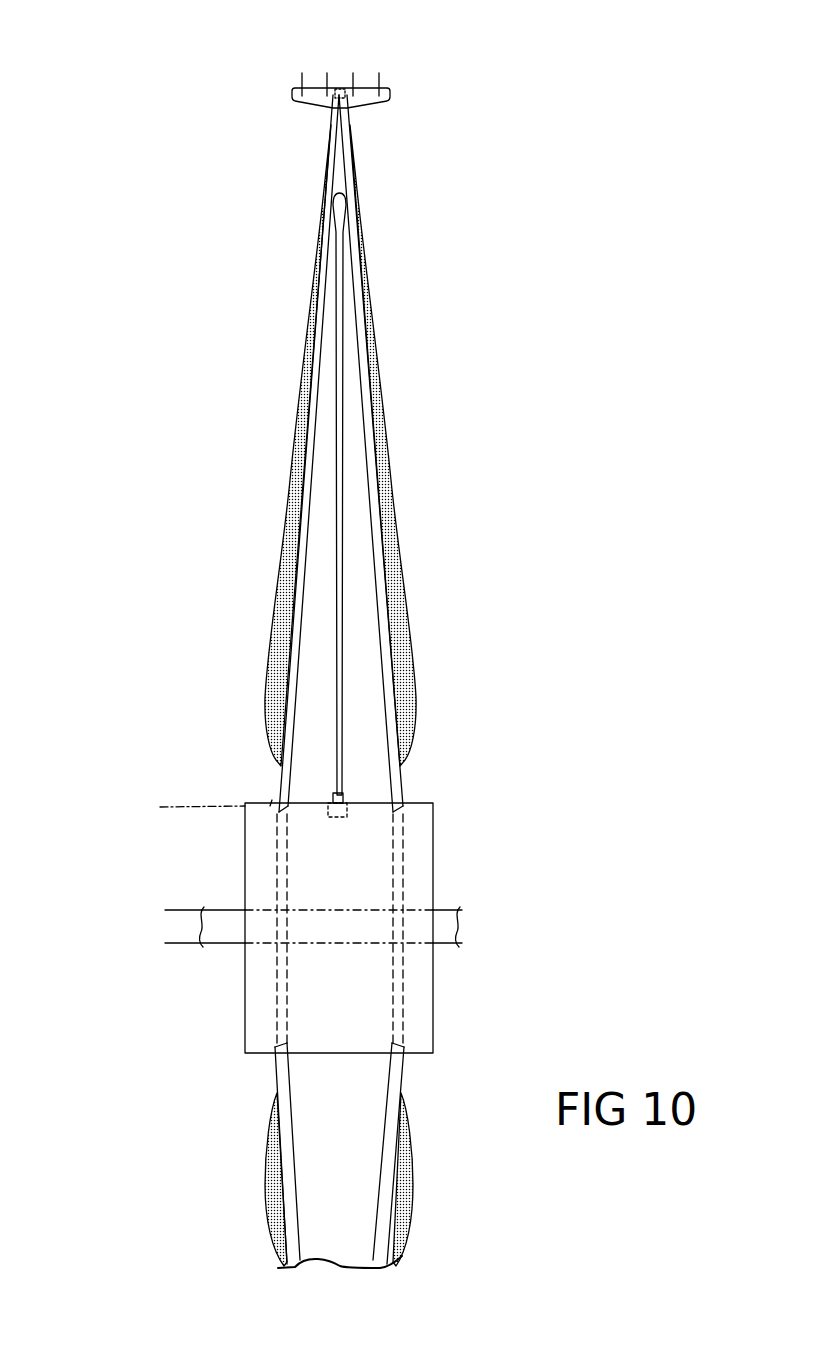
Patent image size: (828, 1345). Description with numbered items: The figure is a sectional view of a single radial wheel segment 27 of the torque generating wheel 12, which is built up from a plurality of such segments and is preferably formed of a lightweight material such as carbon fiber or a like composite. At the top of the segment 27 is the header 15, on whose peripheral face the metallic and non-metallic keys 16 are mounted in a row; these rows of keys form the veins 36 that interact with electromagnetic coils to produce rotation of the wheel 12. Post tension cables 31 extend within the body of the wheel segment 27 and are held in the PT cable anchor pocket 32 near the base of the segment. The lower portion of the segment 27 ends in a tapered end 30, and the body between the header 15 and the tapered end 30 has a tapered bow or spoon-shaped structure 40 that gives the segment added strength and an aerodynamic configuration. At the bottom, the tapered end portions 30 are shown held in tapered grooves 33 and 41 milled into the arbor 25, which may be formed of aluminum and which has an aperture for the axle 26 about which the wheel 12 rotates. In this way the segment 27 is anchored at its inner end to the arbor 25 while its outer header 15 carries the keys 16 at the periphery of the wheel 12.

The generation wheel 12 is at (311, 681).
The header 15 is at (393, 90).
The keys 16 is at (356, 73).
The arbor 25 is at (266, 852).
The axle 26 is at (181, 926).
The wheel segment 27 is at (369, 330).
The tapered end 30 is at (270, 797).
The post tension cable 31 is at (340, 476).
The PT cable anchor pocket 32 is at (356, 802).
The tapered groove 33 is at (189, 808).
The veins 36 is at (336, 54).
The tapered bow or spoon-shaped structure 40 is at (409, 678).
The tapered groove 41 is at (402, 826).